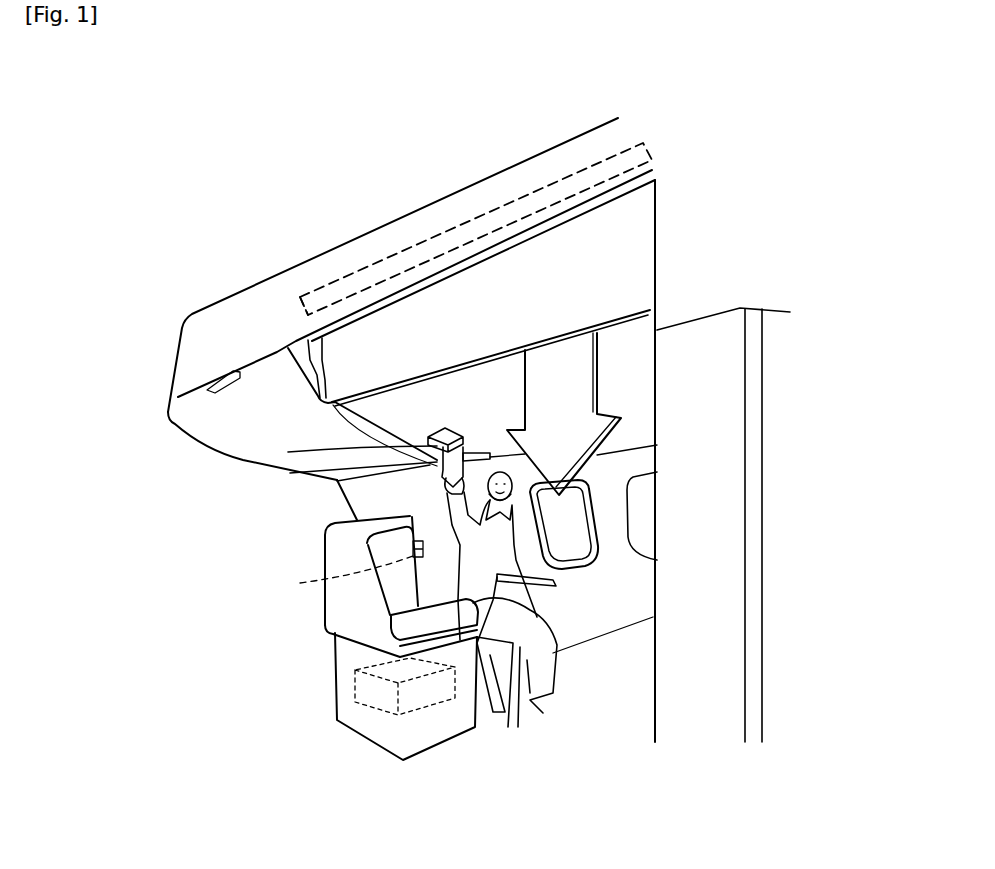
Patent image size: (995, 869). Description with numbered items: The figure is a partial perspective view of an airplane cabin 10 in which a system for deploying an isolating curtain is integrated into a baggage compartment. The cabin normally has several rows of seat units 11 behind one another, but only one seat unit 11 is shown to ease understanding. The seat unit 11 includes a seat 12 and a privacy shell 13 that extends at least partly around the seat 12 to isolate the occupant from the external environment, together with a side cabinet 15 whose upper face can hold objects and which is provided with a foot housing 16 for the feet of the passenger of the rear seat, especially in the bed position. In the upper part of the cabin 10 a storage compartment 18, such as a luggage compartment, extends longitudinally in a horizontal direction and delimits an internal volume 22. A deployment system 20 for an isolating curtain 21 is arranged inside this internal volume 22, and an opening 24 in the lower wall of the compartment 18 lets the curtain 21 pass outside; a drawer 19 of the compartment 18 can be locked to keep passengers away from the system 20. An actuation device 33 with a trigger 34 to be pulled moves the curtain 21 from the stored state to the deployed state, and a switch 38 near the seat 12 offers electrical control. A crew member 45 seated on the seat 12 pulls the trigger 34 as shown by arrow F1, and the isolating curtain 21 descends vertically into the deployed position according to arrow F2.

The airplane cabin 10 is at (193, 244).
The seat unit 11 is at (328, 503).
The seat 12 is at (410, 515).
The privacy shell 13 is at (347, 537).
The side cabinet 15 is at (383, 728).
The foot housing 16 is at (373, 690).
The storage compartment 18 is at (213, 343).
The drawer 19 is at (217, 413).
The system for deploying an isolating curtain 20 is at (637, 165).
The isolating curtain 21 is at (640, 250).
The internal volume 22 is at (360, 262).
The opening 24 is at (465, 408).
The actuation device 33 is at (444, 410).
The trigger 34 is at (319, 368).
The switch 38 is at (313, 582).
The crew member 45 is at (487, 548).
The arrow F1 is at (473, 450).
The arrow F2 is at (578, 378).